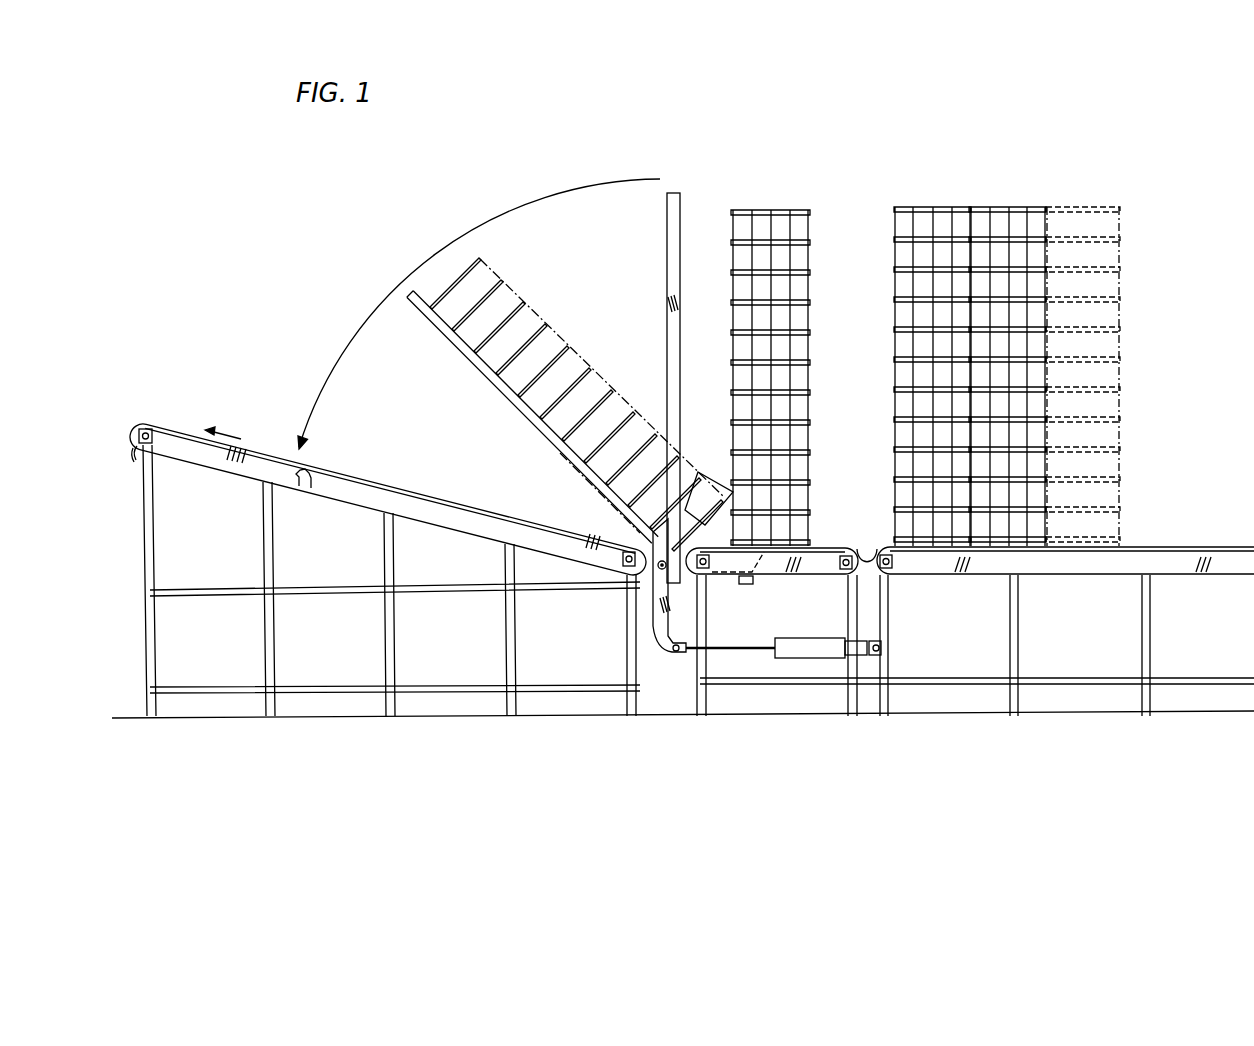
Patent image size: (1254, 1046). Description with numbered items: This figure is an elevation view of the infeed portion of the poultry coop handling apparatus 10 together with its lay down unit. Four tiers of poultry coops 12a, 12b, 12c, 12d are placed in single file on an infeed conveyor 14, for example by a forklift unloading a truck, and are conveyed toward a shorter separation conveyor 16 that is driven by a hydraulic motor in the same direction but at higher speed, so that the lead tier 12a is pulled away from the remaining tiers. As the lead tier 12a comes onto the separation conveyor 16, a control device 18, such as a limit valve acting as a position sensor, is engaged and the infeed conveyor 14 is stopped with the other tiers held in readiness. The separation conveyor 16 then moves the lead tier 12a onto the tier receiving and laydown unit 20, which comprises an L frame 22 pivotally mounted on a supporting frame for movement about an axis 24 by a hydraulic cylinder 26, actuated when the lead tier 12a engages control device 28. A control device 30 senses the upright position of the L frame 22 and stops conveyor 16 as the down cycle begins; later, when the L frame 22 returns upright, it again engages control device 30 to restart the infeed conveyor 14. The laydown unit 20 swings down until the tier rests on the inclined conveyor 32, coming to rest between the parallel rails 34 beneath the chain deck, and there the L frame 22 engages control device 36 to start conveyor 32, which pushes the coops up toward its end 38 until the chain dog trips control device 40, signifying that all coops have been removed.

The apparatus 10 is at (1152, 222).
The lead tier of poultry coops 12a is at (775, 208).
The tier of poultry coops 12b is at (932, 207).
The tier of poultry coops 12c is at (998, 207).
The tier of poultry coops 12d is at (1084, 205).
The infeed conveyor 14 is at (1205, 546).
The separation conveyor 16 is at (826, 546).
The control device 18 is at (840, 545).
The tier receiving and laydown unit 20 is at (641, 373).
The L frame 22 is at (681, 226).
The axis 24 is at (656, 569).
The hydraulic cylinder 26 is at (800, 638).
The control device 28 is at (703, 545).
The control device 30 is at (749, 585).
The inclined conveyor 32 is at (431, 497).
The parallel rails 34 is at (474, 528).
The control device 36 is at (312, 492).
The end of inclined conveyor 38 is at (141, 426).
The control device 40 is at (135, 462).